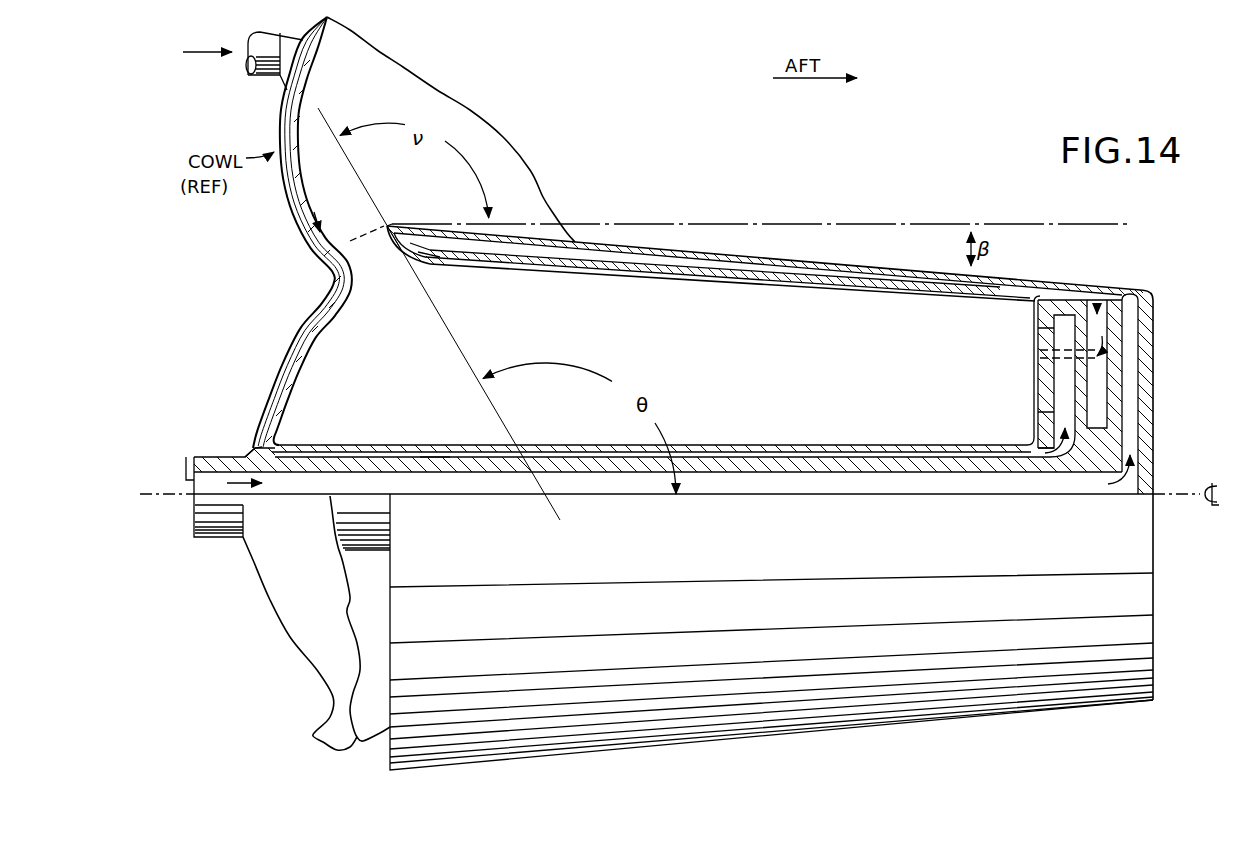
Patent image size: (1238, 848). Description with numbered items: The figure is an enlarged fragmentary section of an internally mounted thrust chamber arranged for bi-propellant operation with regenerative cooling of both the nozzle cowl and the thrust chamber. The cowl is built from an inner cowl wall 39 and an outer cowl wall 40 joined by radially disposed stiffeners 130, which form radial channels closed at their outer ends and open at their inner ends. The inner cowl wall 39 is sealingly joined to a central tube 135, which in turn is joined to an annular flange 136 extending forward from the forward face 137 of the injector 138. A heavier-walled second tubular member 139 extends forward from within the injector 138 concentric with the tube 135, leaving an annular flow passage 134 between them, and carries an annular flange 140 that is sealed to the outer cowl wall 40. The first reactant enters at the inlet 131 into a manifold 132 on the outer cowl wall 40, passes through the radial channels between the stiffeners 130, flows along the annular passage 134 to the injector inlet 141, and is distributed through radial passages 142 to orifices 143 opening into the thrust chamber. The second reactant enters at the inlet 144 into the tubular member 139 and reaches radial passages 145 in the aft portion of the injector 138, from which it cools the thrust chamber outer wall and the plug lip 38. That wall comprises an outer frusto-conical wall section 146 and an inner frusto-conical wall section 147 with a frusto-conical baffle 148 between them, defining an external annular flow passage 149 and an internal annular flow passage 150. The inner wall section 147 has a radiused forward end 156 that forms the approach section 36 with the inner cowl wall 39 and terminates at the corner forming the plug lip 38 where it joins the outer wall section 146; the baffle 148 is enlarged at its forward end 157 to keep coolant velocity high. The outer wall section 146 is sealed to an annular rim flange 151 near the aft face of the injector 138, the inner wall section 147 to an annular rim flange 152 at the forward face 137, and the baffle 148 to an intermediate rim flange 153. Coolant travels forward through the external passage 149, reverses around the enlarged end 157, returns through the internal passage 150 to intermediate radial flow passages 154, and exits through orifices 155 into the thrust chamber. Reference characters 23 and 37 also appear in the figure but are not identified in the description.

The nozzle lower wall 23 is at (441, 474).
The approach section 36 is at (388, 248).
The angle reference 37 is at (350, 242).
The plug lip 38 is at (387, 226).
The inner cowl wall 39 is at (298, 374).
The outer cowl wall 40 is at (278, 374).
The stiffeners 130 is at (274, 398).
The inlet 131 is at (245, 71).
The manifold 132 is at (280, 86).
The annular flow passage 134 is at (323, 452).
The central tube 135 is at (379, 452).
The annular flange 136 is at (1040, 440).
The forward face 137 is at (1037, 316).
The injector 138 is at (1150, 440).
The second tubular member 139 is at (780, 468).
The annular flange 140 is at (243, 450).
The injector inlet 141 is at (978, 447).
The radial passages 142 is at (1060, 395).
The orifices 143 is at (1037, 330).
The second reactant inlet 144 is at (186, 478).
The radial passages 145 is at (1130, 413).
The outer frusto-conical wall section 146 is at (720, 256).
The inner frusto-conical wall section 147 is at (778, 268).
The frusto-conical baffle 148 is at (845, 275).
The external annular flow passage 149 is at (905, 270).
The internal annular flow passage 150 is at (1003, 292).
The annular rim flange 151 is at (1153, 297).
The annular rim flange 152 is at (1038, 300).
The intermediate rim flange 153 is at (1120, 292).
The intermediate radial flow passages 154 is at (1103, 367).
The orifices 155 is at (1040, 357).
The radiused forward end 156 is at (403, 243).
The enlarged forward end 157 is at (462, 257).